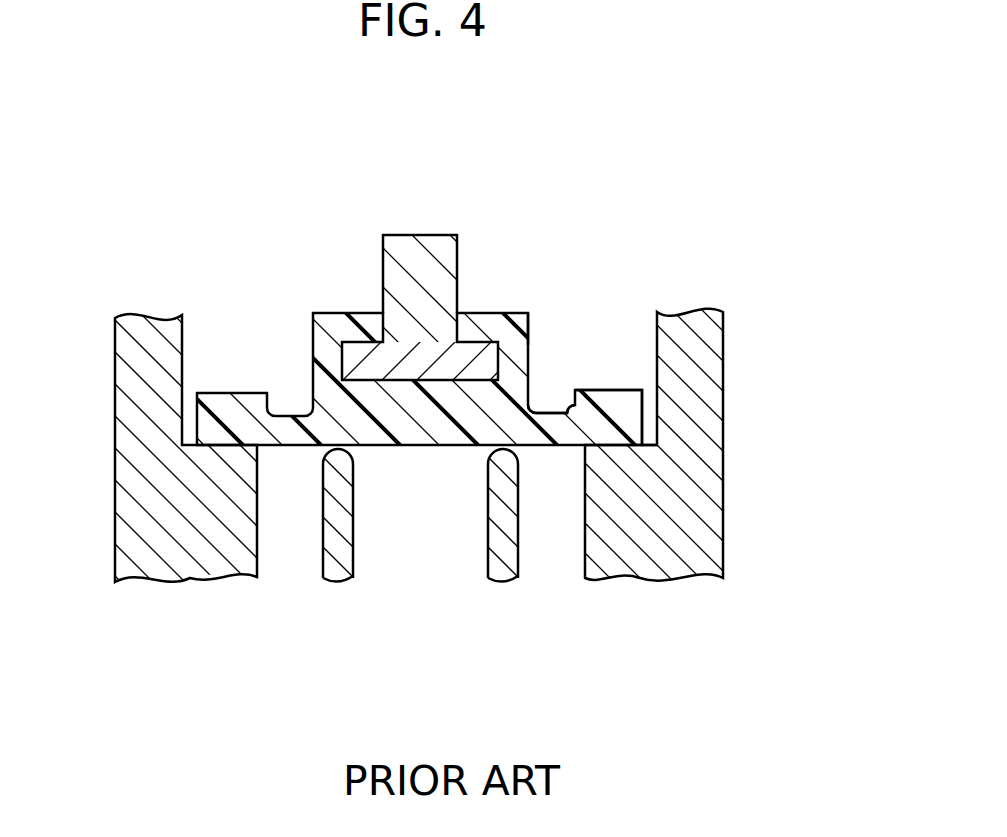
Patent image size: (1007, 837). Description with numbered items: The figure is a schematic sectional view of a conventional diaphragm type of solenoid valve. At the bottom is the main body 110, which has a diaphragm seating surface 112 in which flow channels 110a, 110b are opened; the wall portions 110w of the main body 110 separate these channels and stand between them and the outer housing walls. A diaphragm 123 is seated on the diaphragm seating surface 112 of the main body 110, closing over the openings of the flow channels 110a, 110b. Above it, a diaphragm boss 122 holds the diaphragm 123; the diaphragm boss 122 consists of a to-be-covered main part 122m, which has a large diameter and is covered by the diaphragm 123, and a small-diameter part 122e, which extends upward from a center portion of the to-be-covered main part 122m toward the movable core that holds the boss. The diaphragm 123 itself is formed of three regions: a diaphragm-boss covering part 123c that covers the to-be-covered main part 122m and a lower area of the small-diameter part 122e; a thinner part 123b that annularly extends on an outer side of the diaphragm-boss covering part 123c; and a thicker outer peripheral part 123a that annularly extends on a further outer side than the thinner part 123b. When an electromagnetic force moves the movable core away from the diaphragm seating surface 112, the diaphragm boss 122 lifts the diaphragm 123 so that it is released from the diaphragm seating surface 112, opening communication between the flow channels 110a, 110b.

The main body 110 is at (182, 338).
The flow channel 110a is at (580, 531).
The flow channel 110b is at (318, 531).
The wall portion 110w is at (338, 572).
The diaphragm seating surface 112 is at (652, 443).
The diaphragm boss 122 is at (348, 238).
The small-diameter part 122e is at (457, 236).
The to-be-covered main part 122m is at (418, 363).
The diaphragm 123 is at (641, 271).
The thicker outer peripheral part 123a is at (611, 389).
The thinner part 123b is at (552, 412).
The diaphragm-boss covering part 123c is at (528, 330).